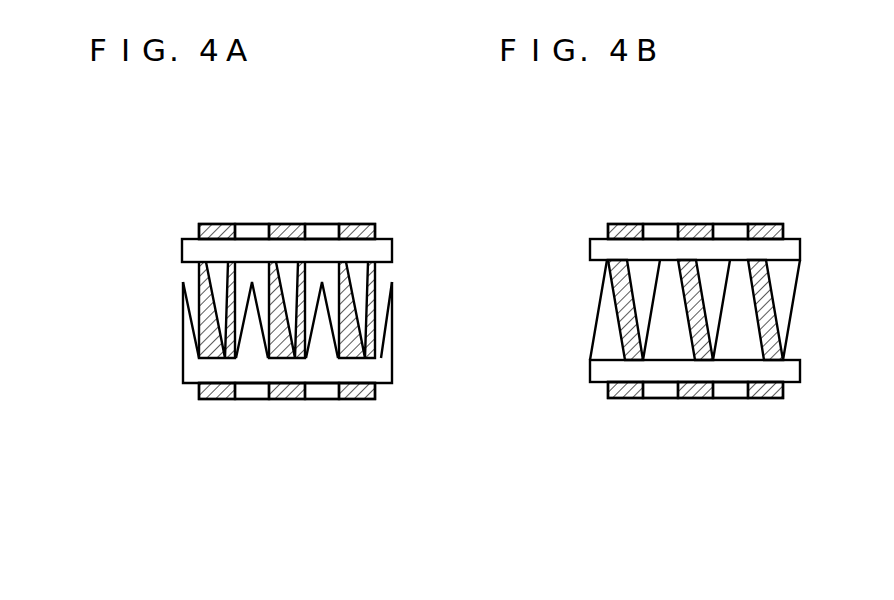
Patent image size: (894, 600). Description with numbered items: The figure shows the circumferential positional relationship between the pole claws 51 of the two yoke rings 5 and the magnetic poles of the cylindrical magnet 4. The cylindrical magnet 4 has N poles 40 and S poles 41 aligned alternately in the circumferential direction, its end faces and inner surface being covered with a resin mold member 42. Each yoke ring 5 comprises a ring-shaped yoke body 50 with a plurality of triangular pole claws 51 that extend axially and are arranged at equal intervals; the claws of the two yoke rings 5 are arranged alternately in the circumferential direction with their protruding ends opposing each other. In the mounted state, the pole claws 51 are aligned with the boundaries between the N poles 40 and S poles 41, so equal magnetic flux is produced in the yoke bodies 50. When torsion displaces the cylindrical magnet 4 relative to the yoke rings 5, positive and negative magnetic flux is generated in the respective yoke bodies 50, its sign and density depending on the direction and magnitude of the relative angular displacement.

In FIG. 4A, the cylindrical magnet 4 is at (313, 403).
In FIG. 4B, the cylindrical magnet 4 is at (720, 403).
In FIG. 4A, the yoke ring 5 is at (97, 226).
In FIG. 4B, the yoke ring 5 is at (505, 226).
In FIG. 4A, the yoke body 50 is at (182, 250).
In FIG. 4B, the yoke body 50 is at (592, 248).
In FIG. 4A, the pole claw 51 is at (212, 282).
In FIG. 4B, the pole claw 51 is at (625, 282).
In FIG. 4A, the N pole 40 is at (207, 223).
In FIG. 4B, the N pole 40 is at (615, 223).
In FIG. 4A, the S pole 41 is at (247, 223).
In FIG. 4B, the S pole 41 is at (656, 223).
In FIG. 4A, the mold member 42 is at (252, 223).
In FIG. 4B, the mold member 42 is at (661, 223).